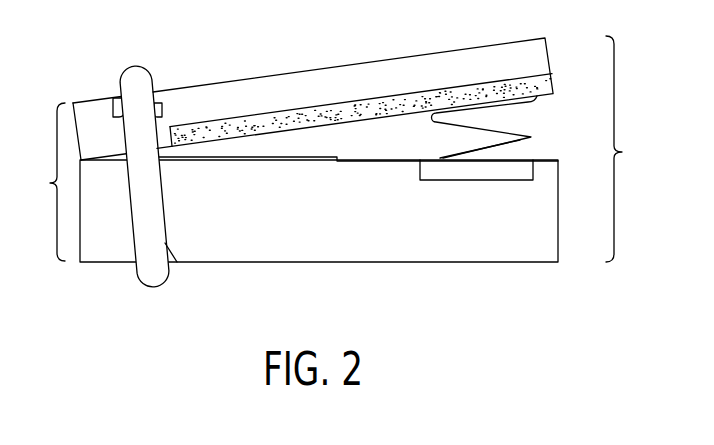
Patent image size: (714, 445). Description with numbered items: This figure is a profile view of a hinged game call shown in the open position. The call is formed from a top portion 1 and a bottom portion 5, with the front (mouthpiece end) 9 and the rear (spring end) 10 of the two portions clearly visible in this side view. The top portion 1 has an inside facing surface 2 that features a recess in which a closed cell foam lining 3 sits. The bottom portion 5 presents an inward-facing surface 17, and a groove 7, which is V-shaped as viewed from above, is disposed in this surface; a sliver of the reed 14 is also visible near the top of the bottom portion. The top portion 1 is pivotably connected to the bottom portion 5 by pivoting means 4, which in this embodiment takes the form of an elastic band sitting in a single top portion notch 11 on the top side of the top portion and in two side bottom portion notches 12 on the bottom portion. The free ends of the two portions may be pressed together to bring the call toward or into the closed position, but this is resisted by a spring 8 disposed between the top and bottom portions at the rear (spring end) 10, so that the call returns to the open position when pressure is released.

The top portion 1 is at (540, 53).
The inside facing surface 2 is at (407, 93).
The closed cell foam lining 3 is at (553, 90).
The pivoting means 4 is at (140, 275).
The bottom portion 5 is at (550, 238).
The groove 7 is at (476, 172).
The spring 8 is at (531, 137).
The front (mouthpiece end) 9 is at (80, 178).
The rear (spring end) 10 is at (626, 149).
The top portion notch 11 is at (154, 93).
The bottom portion notches 12 is at (172, 262).
The reed 14 is at (310, 157).
The inward-facing surface 17 is at (360, 162).